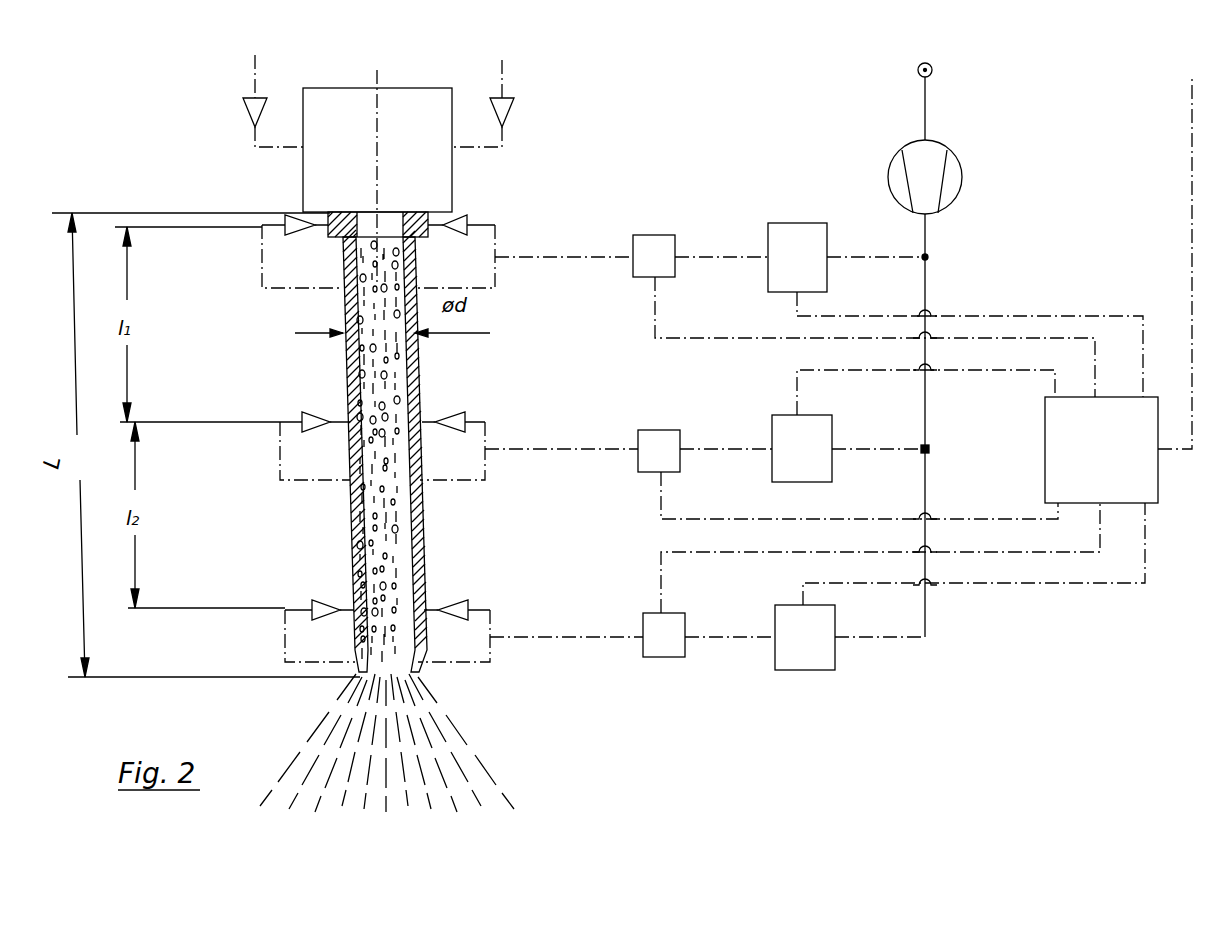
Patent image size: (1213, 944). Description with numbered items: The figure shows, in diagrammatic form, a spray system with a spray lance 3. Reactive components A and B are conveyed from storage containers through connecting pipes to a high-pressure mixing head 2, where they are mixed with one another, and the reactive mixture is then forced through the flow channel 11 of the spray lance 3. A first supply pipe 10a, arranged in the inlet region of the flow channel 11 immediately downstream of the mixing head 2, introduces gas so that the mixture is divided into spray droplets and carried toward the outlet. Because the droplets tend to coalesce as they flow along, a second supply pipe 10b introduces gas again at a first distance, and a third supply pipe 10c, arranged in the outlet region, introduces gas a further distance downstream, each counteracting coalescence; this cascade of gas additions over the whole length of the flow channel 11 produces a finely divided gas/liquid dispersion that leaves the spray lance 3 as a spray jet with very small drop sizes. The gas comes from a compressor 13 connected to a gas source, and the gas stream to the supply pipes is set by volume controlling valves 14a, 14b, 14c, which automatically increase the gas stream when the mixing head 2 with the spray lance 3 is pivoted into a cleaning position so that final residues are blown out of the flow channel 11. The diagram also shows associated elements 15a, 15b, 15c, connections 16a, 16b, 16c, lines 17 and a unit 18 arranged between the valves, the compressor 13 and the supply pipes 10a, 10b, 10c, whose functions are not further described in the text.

The high-pressure mixing head 2 is at (445, 196).
The spray lance 3 is at (423, 551).
The flow channel 11 is at (398, 581).
The first supply pipe 10a is at (340, 240).
The second supply pipe 10b is at (350, 425).
The third supply pipe 10c is at (356, 612).
The compressor 13 is at (958, 185).
The volume controlling valve 14a is at (808, 232).
The volume controlling valve 14b is at (820, 425).
The volume controlling valve 14c is at (820, 665).
The first sensor 15a is at (643, 277).
The second sensor 15b is at (652, 472).
The third sensor 15c is at (662, 657).
The first feed line 16a is at (592, 257).
The second feed line 16b is at (552, 449).
The third feed line 16c is at (552, 637).
The signal lines 17 is at (1020, 519).
The control unit 18 is at (1155, 485).
The reactive component A is at (255, 72).
The reactive component B is at (502, 72).